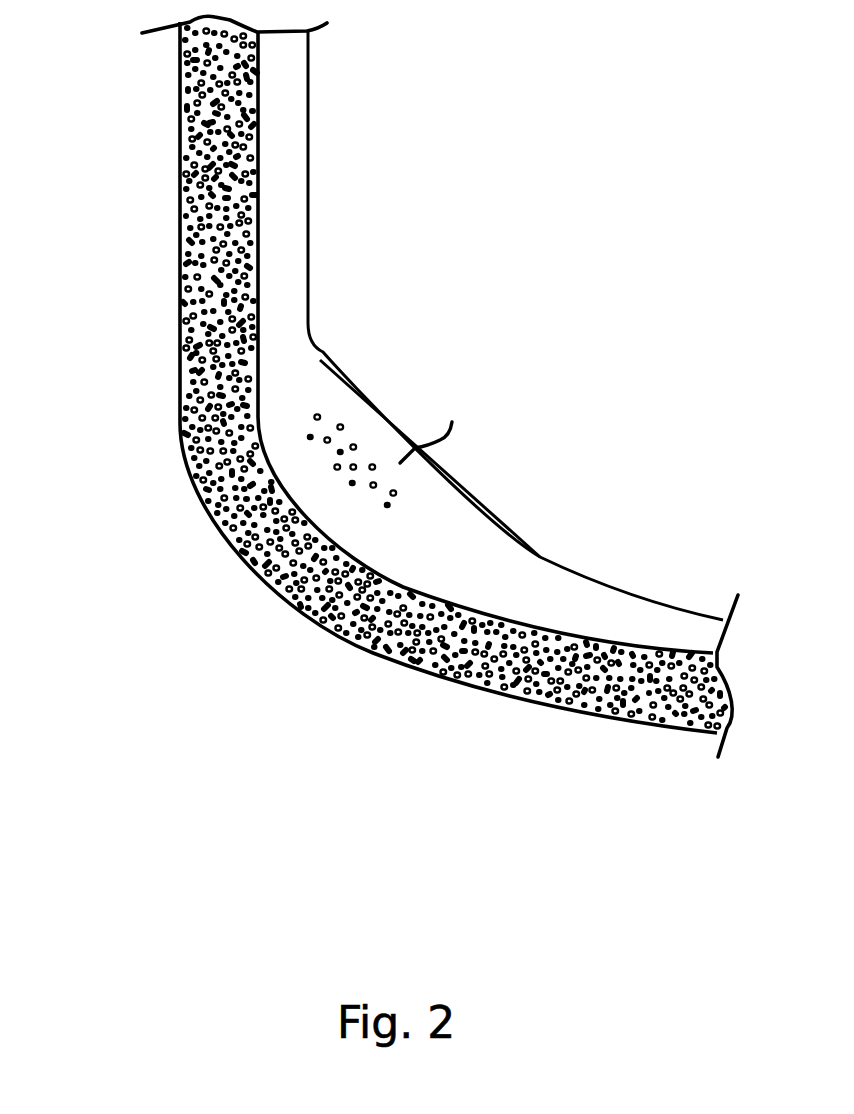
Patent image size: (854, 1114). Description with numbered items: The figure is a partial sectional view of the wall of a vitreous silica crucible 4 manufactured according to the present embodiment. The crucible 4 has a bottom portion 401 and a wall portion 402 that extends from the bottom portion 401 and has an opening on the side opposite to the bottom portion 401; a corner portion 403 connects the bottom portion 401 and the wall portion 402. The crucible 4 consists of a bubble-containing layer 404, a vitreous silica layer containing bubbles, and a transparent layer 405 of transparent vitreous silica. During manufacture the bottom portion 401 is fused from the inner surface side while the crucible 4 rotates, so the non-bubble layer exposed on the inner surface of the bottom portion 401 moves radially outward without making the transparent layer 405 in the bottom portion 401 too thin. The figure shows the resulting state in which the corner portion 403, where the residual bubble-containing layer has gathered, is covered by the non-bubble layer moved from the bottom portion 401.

The vitreous silica crucible 4 is at (390, 430).
The bottom portion 401 is at (655, 737).
The wall portion 402 is at (173, 133).
The corner portion 403 is at (235, 568).
The bubble-containing layer 404 is at (190, 249).
The transparent layer 405 is at (283, 149).